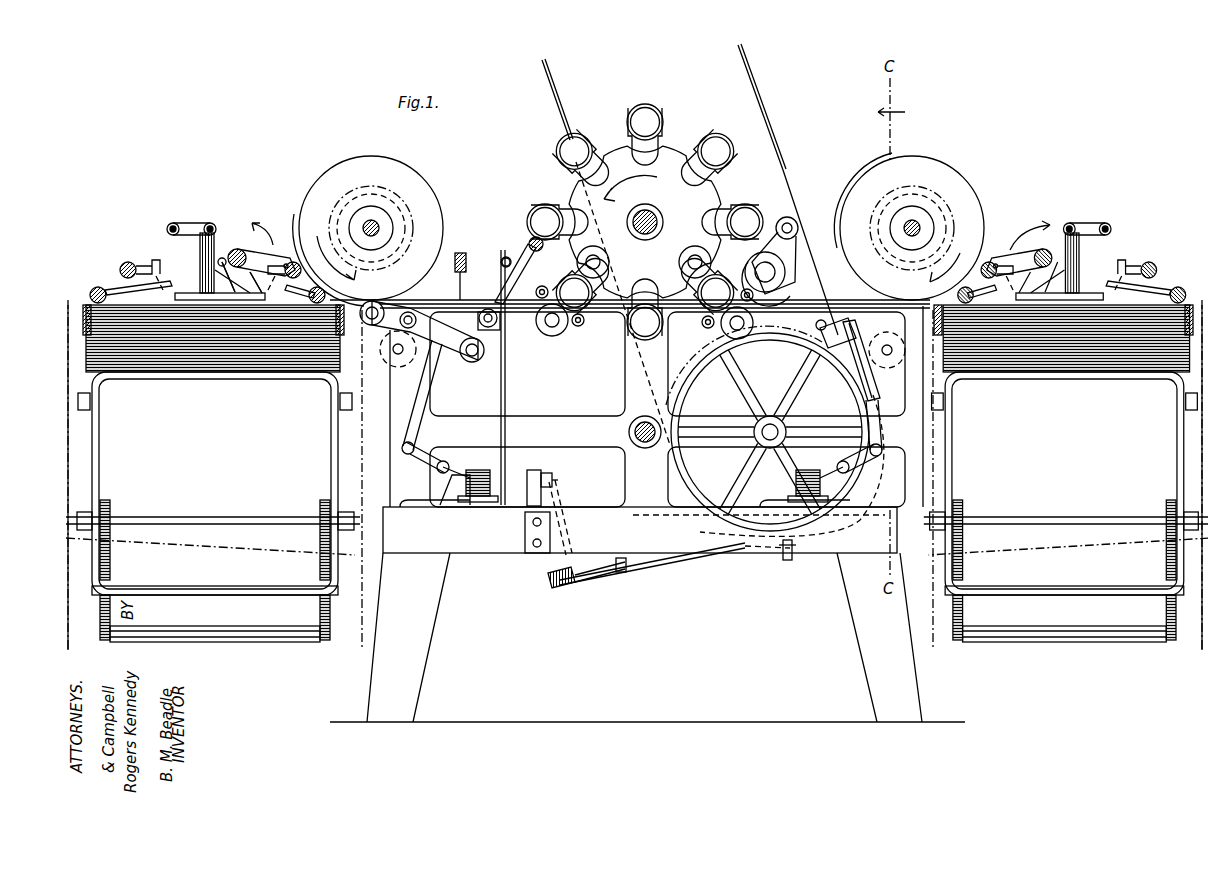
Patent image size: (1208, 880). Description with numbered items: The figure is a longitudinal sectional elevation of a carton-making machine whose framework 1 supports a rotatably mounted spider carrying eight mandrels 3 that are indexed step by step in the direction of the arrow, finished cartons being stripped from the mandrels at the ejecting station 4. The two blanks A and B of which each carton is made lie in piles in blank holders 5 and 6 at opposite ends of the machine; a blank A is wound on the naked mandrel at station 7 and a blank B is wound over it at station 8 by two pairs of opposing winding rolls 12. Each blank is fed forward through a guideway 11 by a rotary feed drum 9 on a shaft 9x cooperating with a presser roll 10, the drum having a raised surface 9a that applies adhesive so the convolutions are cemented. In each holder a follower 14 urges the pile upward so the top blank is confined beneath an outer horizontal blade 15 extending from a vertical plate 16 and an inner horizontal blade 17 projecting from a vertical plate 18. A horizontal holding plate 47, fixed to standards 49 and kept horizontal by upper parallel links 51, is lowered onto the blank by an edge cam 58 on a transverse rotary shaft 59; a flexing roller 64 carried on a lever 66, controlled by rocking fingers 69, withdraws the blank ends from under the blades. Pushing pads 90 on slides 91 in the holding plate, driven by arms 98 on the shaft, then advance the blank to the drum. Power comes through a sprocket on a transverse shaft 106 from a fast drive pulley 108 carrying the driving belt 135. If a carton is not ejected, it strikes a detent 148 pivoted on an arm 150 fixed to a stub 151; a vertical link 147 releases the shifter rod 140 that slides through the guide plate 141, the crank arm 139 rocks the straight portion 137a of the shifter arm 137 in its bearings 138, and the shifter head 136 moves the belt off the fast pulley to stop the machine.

The framework 1 is at (622, 377).
The mandrels 3 is at (662, 126).
The ejecting station 4 is at (557, 222).
The blank holder 5 is at (213, 507).
The blank holder 6 is at (1066, 507).
The station 7 is at (583, 284).
The station 8 is at (707, 284).
The rotary feed drum 9 is at (442, 223).
The shaft 9x is at (377, 222).
The raised surface 9a is at (399, 292).
The presser roll 10 is at (378, 325).
The guideway 11 is at (466, 290).
The winding rolls 12 is at (606, 263).
The follower 14 is at (243, 372).
The outer horizontal blade 15 is at (86, 305).
The vertical plate 16 is at (70, 333).
The inner horizontal blade 17 is at (351, 275).
The vertical plate 18 is at (344, 333).
The horizontal plate 47 is at (205, 302).
The standards 49 is at (200, 252).
The upper parallel links 51 is at (195, 224).
The edge cam 58 is at (223, 258).
The transverse rotary shaft 59 is at (240, 253).
The roller 64 is at (92, 292).
The lever 66 is at (108, 290).
The rocking fingers 69 is at (145, 262).
The pushing pads 90 is at (256, 300).
The slides 91 is at (229, 298).
The arms 98 is at (651, 231).
The transverse shaft 106 is at (395, 355).
The fast drive pulley 108 is at (787, 340).
The driving belt 135 is at (793, 200).
The shifter head 136 is at (833, 337).
The shifter arm 137 is at (880, 388).
The straight portion 137a is at (665, 566).
The bearings 138 is at (618, 578).
The crank arm 139 is at (560, 501).
The shifter rod 140 is at (549, 478).
The guide plate 141 is at (540, 466).
The vertical link 147 is at (506, 392).
The detent 148 is at (522, 249).
The arm 150 is at (511, 264).
The stub 151 is at (500, 321).
The blank A is at (170, 360).
The blank B is at (1128, 360).